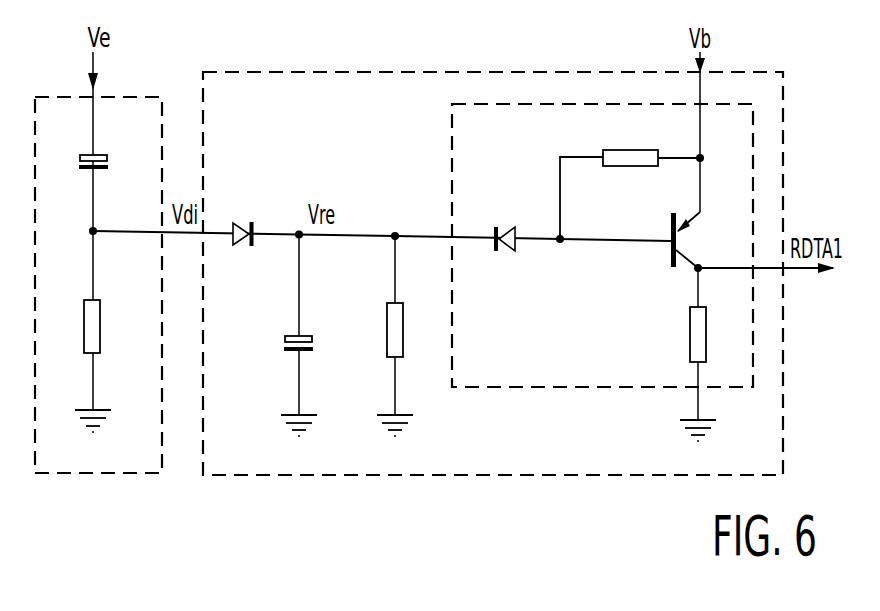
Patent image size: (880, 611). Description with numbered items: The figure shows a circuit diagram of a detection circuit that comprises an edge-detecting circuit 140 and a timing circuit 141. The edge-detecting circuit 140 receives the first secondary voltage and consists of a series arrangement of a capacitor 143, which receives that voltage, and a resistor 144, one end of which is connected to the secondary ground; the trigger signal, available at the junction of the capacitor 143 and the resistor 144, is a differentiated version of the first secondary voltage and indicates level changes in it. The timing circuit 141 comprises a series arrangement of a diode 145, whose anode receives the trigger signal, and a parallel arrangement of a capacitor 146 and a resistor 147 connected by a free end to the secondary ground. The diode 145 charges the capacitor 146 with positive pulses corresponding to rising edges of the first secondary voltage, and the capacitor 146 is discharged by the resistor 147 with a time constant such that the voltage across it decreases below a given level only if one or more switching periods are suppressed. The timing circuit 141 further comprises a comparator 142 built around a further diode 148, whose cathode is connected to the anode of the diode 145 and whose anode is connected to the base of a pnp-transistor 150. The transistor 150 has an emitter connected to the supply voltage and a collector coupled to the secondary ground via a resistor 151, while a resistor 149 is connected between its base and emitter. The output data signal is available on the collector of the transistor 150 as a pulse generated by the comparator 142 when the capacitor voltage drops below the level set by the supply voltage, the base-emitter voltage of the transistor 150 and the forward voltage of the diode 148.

The edge-detecting circuit 140 is at (45, 97).
The timing circuit 141 is at (232, 70).
The comparator 142 is at (452, 137).
The capacitor 143 is at (103, 163).
The resistor 144 is at (101, 338).
The diode 145 is at (240, 221).
The capacitor 146 is at (284, 345).
The resistor 147 is at (386, 345).
The further diode 148 is at (507, 225).
The resistor 149 is at (617, 168).
The pnp-transistor 150 is at (670, 253).
The resistor 151 is at (689, 335).